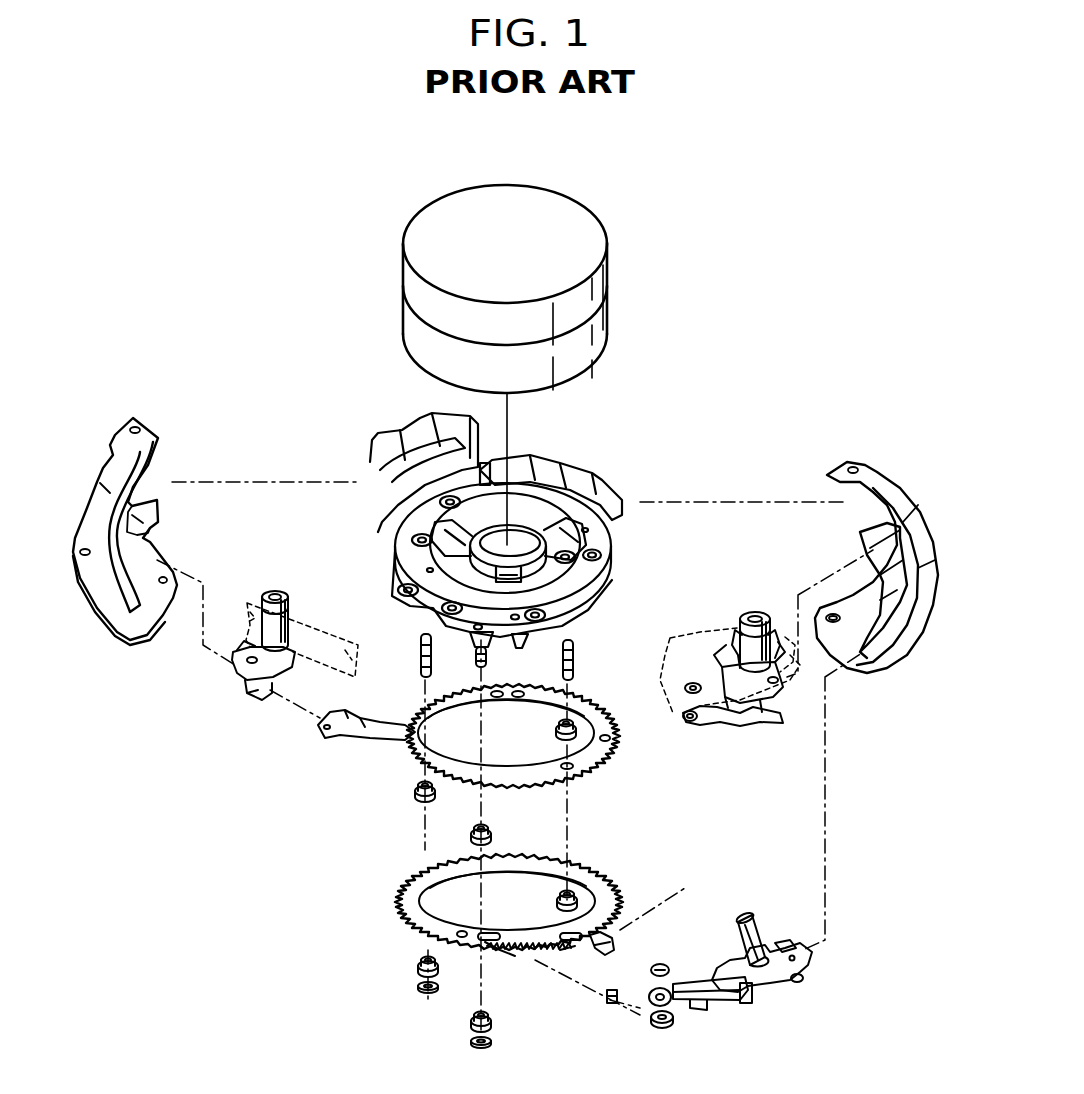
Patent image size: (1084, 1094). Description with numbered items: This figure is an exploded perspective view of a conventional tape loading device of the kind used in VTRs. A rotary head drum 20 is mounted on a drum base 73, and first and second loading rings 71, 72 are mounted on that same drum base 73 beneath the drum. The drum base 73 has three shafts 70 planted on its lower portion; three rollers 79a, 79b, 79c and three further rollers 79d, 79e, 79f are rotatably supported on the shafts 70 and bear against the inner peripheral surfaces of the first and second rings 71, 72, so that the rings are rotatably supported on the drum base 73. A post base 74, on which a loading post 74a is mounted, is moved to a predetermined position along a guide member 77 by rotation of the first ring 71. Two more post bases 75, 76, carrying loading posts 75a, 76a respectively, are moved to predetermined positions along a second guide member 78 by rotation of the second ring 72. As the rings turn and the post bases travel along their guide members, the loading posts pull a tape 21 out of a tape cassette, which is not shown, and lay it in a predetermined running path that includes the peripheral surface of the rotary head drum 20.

The rotary head drum 20 is at (608, 280).
The tape 21 is at (523, 642).
The shafts 70 is at (420, 656).
The first loading ring 71 is at (395, 752).
The second loading ring 72 is at (392, 903).
The drum base 73 is at (612, 552).
The post base 74 is at (245, 670).
The loading post 74a is at (275, 592).
The post base 75 is at (758, 722).
The loading post 75a is at (752, 615).
The post base 76 is at (777, 997).
The loading post 76a is at (765, 952).
The guide member 77 is at (118, 615).
The guide member 78 is at (893, 655).
The roller 79a is at (412, 793).
The roller 79b is at (508, 815).
The roller 79c is at (578, 740).
The roller 79d is at (415, 975).
The roller 79e is at (494, 1030).
The roller 79f is at (578, 895).